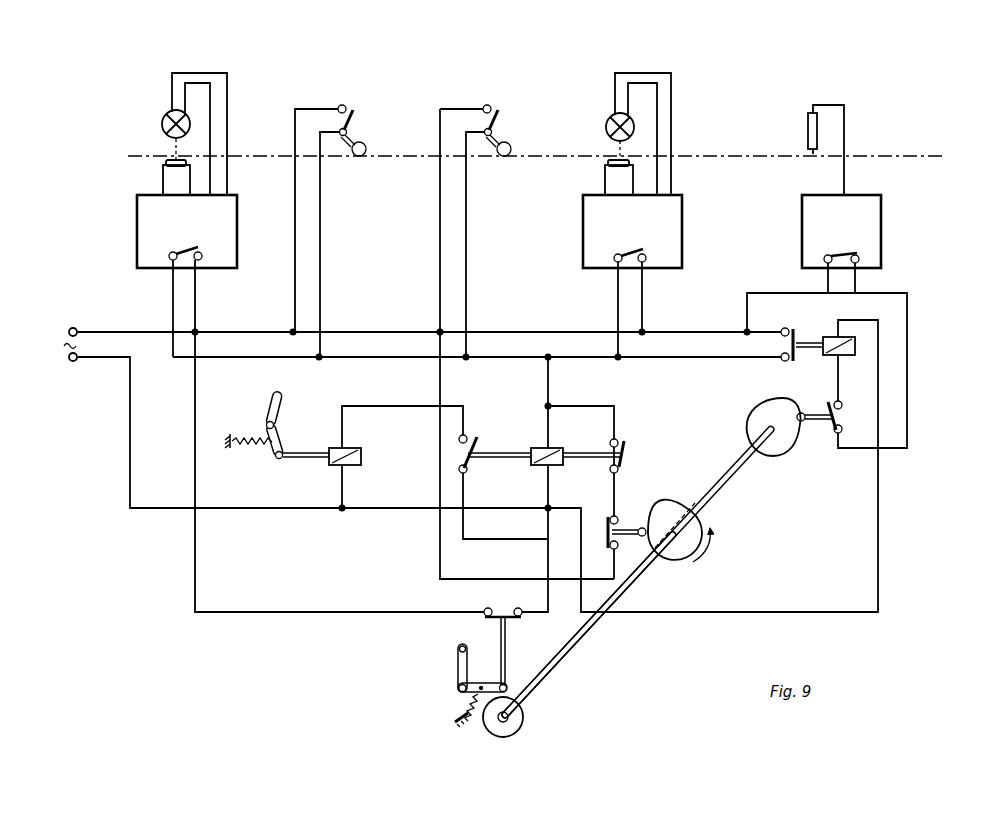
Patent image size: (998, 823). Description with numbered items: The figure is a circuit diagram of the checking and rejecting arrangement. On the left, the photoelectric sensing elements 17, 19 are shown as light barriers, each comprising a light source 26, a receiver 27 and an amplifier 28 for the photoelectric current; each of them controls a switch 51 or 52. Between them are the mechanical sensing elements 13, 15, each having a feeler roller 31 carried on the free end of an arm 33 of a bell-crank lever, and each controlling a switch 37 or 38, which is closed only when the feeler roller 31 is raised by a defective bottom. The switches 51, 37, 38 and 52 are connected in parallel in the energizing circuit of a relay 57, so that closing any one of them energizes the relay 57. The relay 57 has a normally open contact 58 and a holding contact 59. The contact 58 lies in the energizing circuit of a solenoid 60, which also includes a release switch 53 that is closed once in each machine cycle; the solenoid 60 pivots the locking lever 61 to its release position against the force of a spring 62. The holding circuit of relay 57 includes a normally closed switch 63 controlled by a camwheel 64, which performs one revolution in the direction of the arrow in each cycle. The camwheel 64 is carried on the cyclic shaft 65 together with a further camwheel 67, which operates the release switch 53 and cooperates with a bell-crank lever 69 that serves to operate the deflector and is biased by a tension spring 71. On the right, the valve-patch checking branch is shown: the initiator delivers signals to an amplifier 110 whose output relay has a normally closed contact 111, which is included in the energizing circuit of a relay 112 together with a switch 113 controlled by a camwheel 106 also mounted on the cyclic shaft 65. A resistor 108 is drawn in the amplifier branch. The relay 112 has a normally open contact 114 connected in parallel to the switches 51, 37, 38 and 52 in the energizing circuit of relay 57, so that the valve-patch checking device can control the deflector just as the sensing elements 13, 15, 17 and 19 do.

The sensing element 17 is at (342, 128).
The sensing element 19 is at (607, 113).
The light source 26 is at (160, 127).
The receiver 27 is at (165, 163).
The amplifier 28 is at (155, 218).
The switch 51 is at (183, 251).
The switch 52 is at (635, 252).
The sensing element 13 is at (416, 214).
The sensing element 15 is at (493, 218).
The switch 37 is at (357, 110).
The switch 38 is at (500, 110).
The arm 33 is at (345, 140).
The feeler roller 31 is at (365, 156).
The resistor 108 is at (806, 127).
The amplifier 110 is at (816, 244).
The normally closed contact 111 is at (840, 253).
The relay 112 is at (845, 346).
The switch 113 is at (835, 417).
The normally open contact 114 is at (797, 333).
The camwheel 106 is at (782, 447).
The locking lever 61 is at (271, 410).
The spring 62 is at (251, 449).
The solenoid 60 is at (352, 458).
The normally open contact 58 is at (478, 441).
The relay 57 is at (538, 458).
The holding contact 59 is at (628, 449).
The switch 63 is at (606, 520).
The camwheel 64 is at (668, 506).
The cyclic shaft 65 is at (567, 652).
The camwheel 67 is at (522, 722).
The release switch 53 is at (512, 620).
The bell-crank lever 69 is at (458, 662).
The tension spring 71 is at (475, 699).